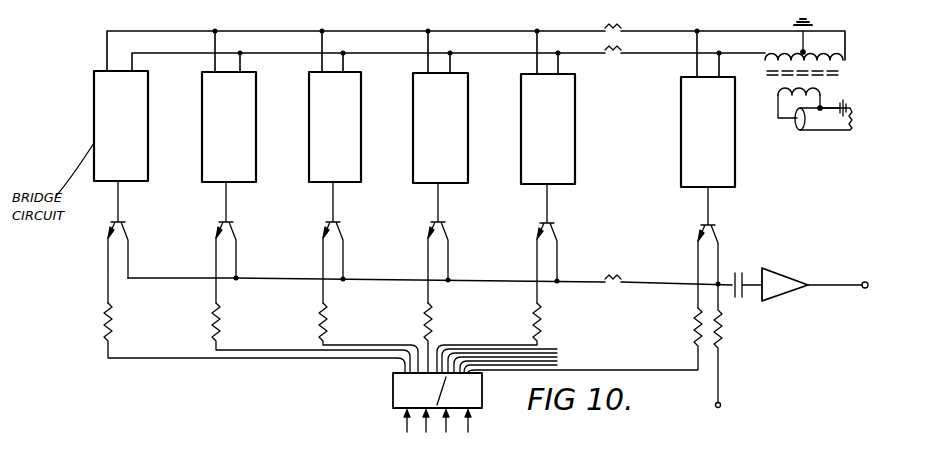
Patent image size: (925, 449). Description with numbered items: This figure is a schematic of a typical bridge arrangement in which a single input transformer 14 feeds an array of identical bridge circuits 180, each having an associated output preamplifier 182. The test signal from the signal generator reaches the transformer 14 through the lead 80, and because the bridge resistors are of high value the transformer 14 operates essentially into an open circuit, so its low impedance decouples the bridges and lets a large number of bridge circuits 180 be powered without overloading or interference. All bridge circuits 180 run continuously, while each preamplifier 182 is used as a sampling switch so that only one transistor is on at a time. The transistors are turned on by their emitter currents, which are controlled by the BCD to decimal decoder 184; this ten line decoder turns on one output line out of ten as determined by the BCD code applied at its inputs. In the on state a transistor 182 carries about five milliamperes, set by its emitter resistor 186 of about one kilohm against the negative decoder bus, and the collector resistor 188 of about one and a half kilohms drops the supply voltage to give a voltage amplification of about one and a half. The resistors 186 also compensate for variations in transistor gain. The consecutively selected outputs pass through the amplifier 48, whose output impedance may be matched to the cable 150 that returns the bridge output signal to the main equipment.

The bridge circuit 180 is at (716, 134).
The output preamplifier 182 is at (732, 207).
The resistor 186 is at (675, 330).
The resistor 188 is at (742, 340).
The BCD to decimal decoder 184 is at (253, 411).
The transformer 14 is at (766, 84).
The lead 80 is at (838, 134).
The amplifier 48 is at (783, 290).
The cable 150 is at (842, 300).